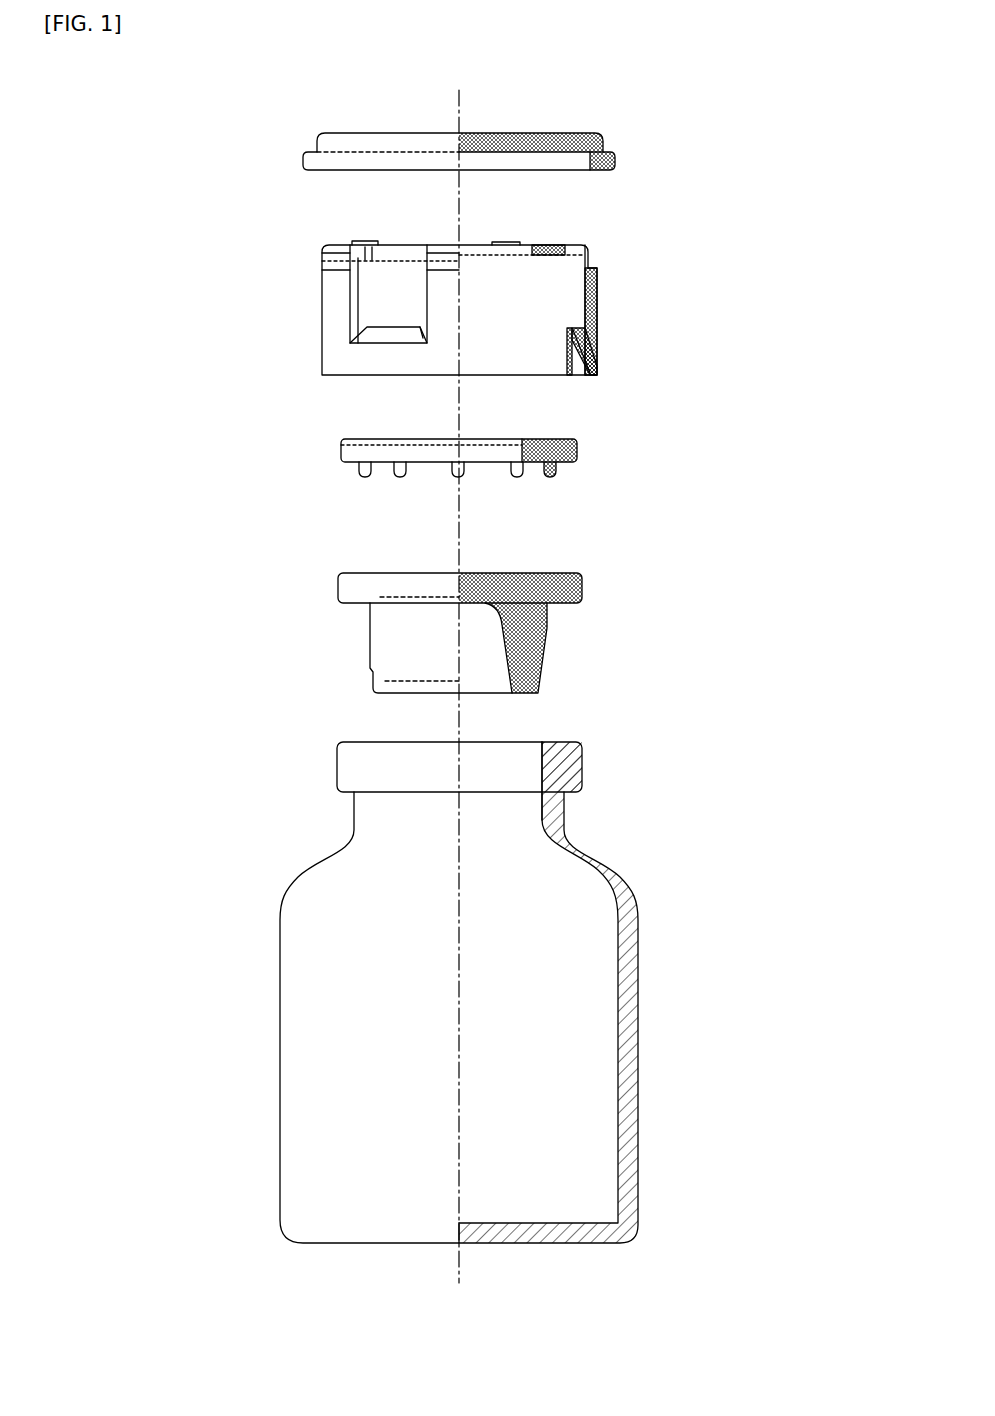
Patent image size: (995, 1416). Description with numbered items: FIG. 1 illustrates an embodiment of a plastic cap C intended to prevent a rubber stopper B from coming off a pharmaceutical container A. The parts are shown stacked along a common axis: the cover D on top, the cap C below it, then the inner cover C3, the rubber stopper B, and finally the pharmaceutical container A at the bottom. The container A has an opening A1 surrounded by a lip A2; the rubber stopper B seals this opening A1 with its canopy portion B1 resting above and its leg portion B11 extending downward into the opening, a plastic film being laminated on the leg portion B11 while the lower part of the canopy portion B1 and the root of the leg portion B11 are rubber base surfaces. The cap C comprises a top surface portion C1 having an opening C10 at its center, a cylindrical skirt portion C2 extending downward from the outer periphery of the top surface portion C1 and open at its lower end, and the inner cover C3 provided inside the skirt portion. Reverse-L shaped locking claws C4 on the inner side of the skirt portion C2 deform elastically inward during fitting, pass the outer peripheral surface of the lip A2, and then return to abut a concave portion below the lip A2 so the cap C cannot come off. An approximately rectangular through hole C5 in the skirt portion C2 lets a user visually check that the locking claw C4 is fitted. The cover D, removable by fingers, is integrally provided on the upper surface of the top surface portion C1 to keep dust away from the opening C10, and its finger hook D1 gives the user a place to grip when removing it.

The pharmaceutical container A is at (665, 884).
The opening A1 is at (495, 768).
The lip A2 is at (583, 757).
The rubber stopper B is at (614, 614).
The canopy portion B1 is at (580, 580).
The leg portion B11 is at (543, 633).
The cap C is at (637, 258).
The top surface portion C1 is at (543, 246).
The opening C10 is at (490, 244).
The skirt portion C2 is at (600, 297).
The inner cover C3 is at (592, 450).
The locking claw C4 is at (598, 327).
The through hole C5 is at (372, 292).
The cover D is at (658, 156).
The finger hook D1 is at (617, 158).